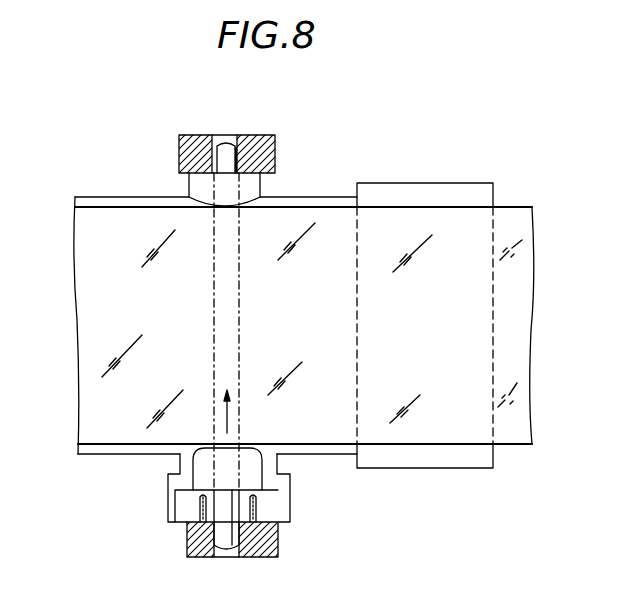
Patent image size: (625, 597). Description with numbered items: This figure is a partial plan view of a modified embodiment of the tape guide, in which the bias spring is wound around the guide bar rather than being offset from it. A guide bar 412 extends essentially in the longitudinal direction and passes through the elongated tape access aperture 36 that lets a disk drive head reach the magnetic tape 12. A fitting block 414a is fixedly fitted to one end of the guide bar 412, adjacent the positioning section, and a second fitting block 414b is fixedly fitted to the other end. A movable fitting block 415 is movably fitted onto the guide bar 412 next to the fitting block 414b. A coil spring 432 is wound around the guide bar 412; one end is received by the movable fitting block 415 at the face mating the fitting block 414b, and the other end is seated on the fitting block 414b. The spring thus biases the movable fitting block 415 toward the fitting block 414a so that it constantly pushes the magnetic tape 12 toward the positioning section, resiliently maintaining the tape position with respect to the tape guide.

The magnetic tape 12 is at (128, 430).
The tape access aperture 36 is at (448, 460).
The guide bar 412 is at (222, 158).
The fitting block 414a is at (252, 188).
The fitting block 414b is at (278, 547).
The movable fitting block 415 is at (183, 488).
The coil spring 432 is at (200, 507).